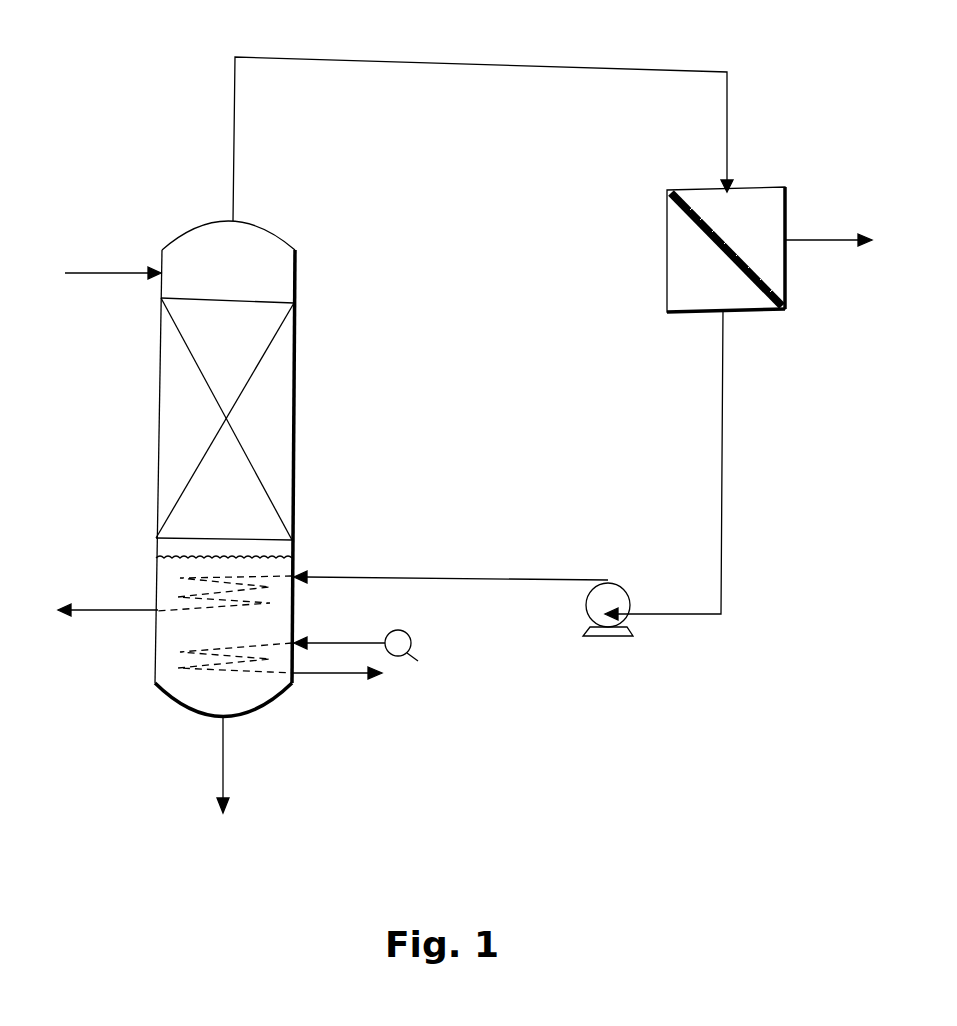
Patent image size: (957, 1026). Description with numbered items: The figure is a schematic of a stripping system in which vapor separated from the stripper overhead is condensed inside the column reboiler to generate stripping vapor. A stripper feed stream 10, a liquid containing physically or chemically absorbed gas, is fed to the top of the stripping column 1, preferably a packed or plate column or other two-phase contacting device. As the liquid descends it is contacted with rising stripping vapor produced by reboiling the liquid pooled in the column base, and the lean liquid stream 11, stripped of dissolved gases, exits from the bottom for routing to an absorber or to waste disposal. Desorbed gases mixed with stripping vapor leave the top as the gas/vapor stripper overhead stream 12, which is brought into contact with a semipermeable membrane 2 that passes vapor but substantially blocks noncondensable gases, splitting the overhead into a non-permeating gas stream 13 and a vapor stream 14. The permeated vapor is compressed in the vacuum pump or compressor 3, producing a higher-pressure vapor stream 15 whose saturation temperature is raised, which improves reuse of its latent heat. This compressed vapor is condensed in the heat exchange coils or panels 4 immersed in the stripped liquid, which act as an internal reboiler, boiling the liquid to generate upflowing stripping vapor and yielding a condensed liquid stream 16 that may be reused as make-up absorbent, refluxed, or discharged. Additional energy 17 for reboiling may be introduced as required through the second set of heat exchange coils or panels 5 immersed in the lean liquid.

The stripping column 1 is at (154, 406).
The semipermeable membrane 2 is at (672, 191).
The vacuum pump or compressor 3 is at (626, 590).
The heat exchanger/reboiler coils 4 is at (174, 575).
The heat exchange coils or panels 5 is at (280, 692).
The stripper feed stream 10 is at (92, 266).
The lean liquid stream 11 is at (216, 783).
The gas/vapor stripper overhead stream 12 is at (353, 58).
The non-permeating gas stream 13 is at (825, 237).
The vapor stream 14 is at (726, 442).
The compressed vapor stream 15 is at (479, 575).
The condensed liquid stream 16 is at (94, 607).
The additional energy 17 is at (356, 640).